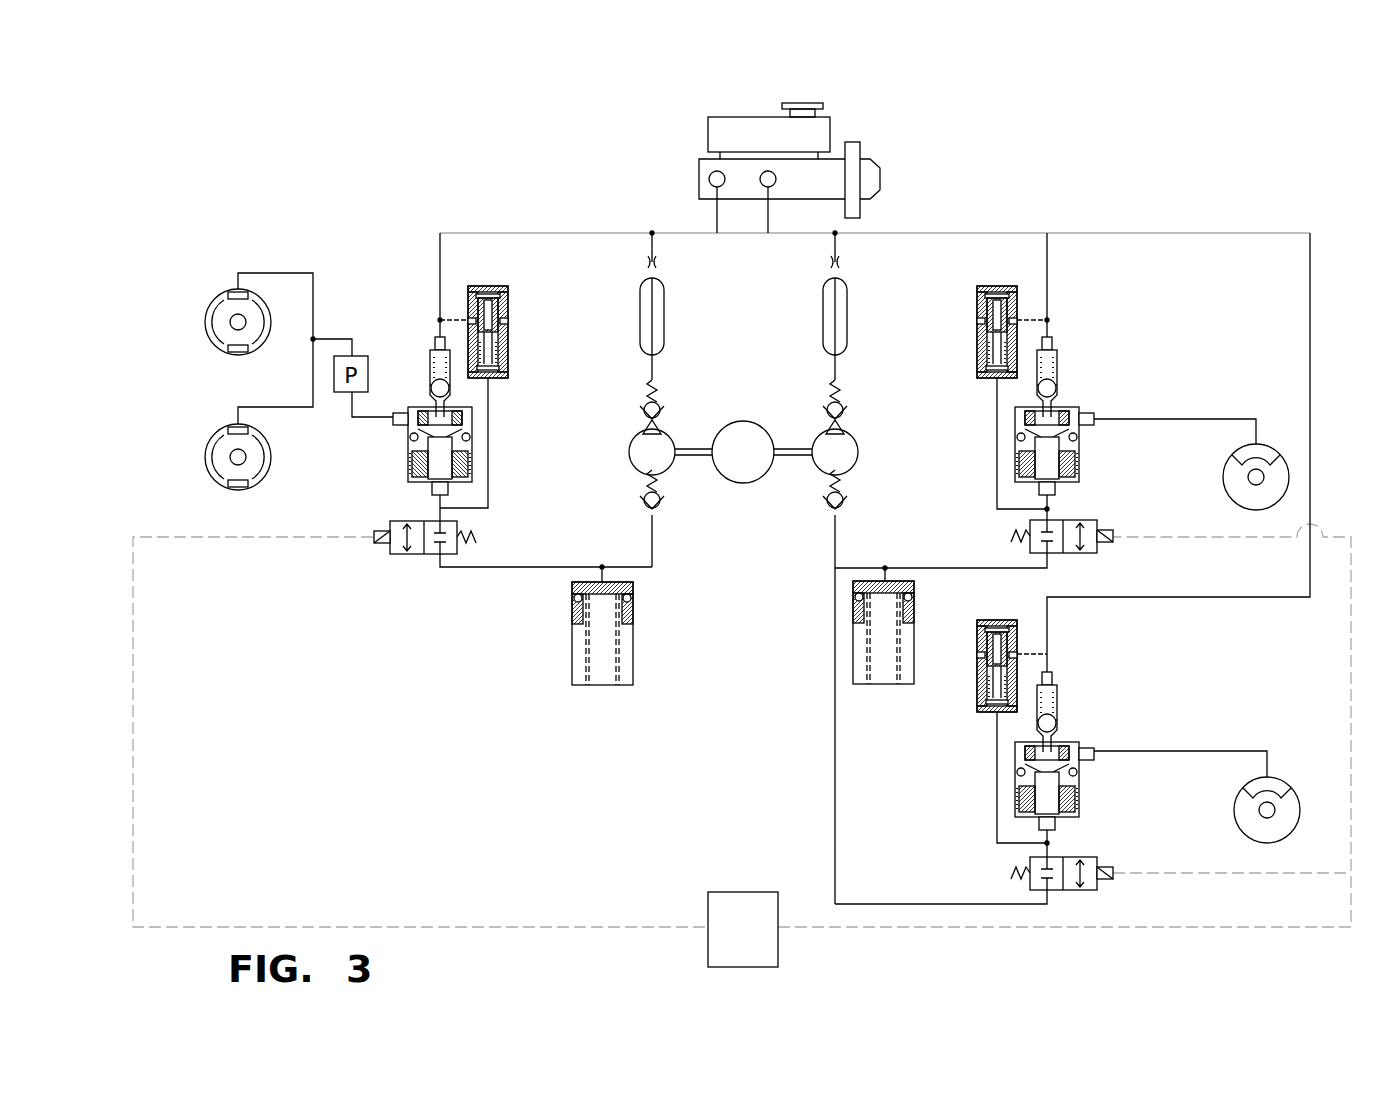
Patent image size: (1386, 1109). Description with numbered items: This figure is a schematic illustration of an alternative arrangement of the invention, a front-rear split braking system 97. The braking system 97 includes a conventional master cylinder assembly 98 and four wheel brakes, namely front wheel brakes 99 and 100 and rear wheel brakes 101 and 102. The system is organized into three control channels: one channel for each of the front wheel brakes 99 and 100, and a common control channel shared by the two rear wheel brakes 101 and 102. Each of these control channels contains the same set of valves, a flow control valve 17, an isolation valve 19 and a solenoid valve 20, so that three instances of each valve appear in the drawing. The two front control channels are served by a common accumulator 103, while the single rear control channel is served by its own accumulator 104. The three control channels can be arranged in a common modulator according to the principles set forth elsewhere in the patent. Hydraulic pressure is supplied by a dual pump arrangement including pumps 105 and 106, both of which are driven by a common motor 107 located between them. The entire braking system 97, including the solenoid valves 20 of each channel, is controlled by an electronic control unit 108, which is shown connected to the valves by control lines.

The flow control valve 17 is at (508, 318).
The isolation valve 19 is at (408, 452).
The solenoid valve 20 is at (406, 555).
The braking system 97 is at (912, 214).
The master cylinder assembly 98 is at (850, 148).
The front wheel brake 99 is at (1258, 452).
The front wheel brake 100 is at (1275, 787).
The rear wheel brake 101 is at (235, 298).
The rear wheel brake 102 is at (235, 435).
The accumulator 103 is at (898, 582).
The accumulator 104 is at (633, 586).
The pump 105 is at (855, 445).
The pump 106 is at (628, 450).
The motor 107 is at (755, 428).
The electronic control unit 108 is at (753, 895).